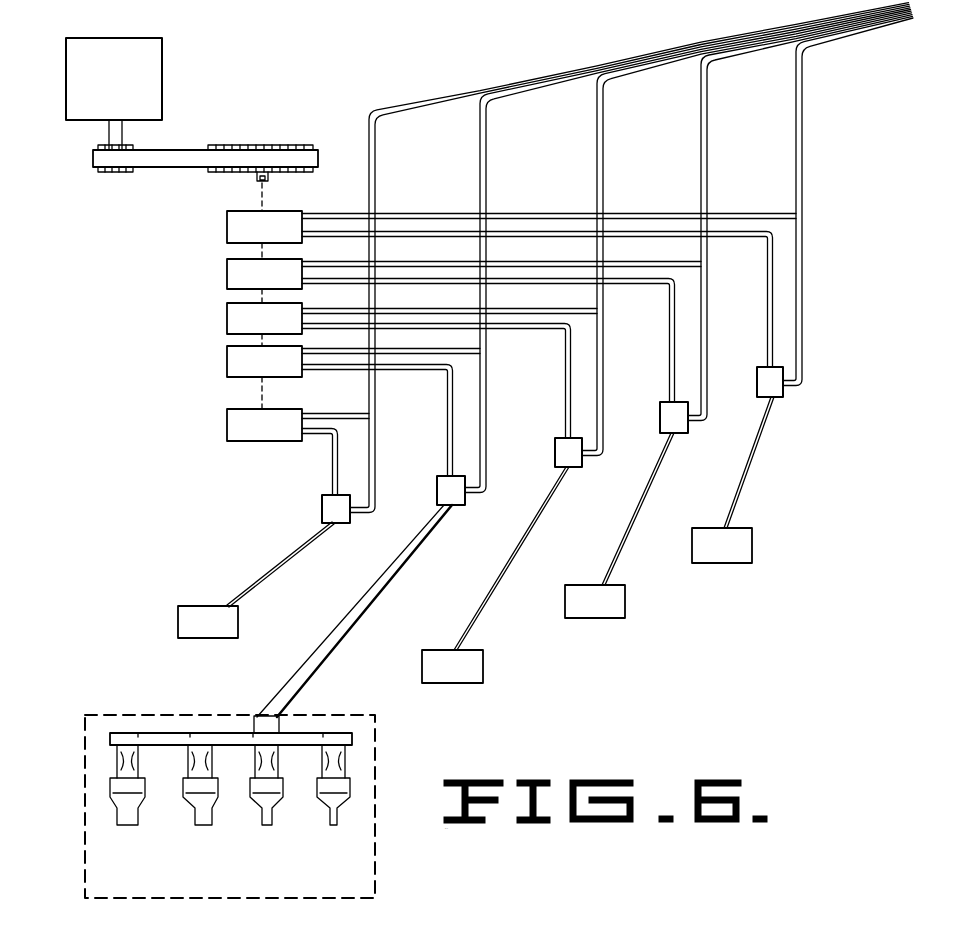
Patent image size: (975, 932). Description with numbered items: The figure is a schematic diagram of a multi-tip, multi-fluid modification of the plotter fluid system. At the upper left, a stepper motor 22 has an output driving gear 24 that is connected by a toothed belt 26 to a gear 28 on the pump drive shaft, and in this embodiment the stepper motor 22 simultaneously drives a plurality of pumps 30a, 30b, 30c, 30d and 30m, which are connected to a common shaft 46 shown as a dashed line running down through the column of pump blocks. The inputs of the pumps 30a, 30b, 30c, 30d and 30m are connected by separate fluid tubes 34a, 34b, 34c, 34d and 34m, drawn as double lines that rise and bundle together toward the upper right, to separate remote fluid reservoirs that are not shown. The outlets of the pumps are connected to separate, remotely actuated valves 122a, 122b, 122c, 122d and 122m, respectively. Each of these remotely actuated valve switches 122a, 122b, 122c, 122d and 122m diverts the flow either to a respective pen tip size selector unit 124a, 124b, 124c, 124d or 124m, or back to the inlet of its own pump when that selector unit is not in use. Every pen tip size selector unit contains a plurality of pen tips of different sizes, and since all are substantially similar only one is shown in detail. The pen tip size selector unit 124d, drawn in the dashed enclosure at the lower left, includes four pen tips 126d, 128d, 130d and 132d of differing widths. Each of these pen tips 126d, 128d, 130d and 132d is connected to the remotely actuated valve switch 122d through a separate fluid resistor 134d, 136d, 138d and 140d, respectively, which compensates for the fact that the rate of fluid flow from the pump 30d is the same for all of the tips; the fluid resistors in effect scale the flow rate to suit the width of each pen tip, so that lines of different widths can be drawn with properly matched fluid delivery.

The stepper motor 22 is at (165, 46).
The output driving gear 24 is at (110, 177).
The toothed belt 26 is at (185, 163).
The gear 28 is at (229, 146).
The common shaft 46 is at (269, 181).
The pump 30a is at (227, 231).
The pump 30b is at (227, 278).
The pump 30c is at (227, 321).
The pump 30d is at (227, 363).
The pump 30m is at (227, 424).
The fluid tube 34a is at (805, 120).
The fluid tube 34b is at (708, 137).
The fluid tube 34c is at (605, 157).
The fluid tube 34d is at (488, 168).
The fluid tube 34m is at (376, 182).
The remotely actuated valve 122a is at (758, 373).
The remotely actuated valve 122b is at (660, 418).
The remotely actuated valve 122c is at (555, 453).
The remotely actuated valve switch 122d is at (437, 488).
The remotely actuated valve 122m is at (322, 510).
The pen tip size selector unit 124a is at (705, 565).
The pen tip size selector unit 124b is at (564, 611).
The pen tip size selector unit 124c is at (422, 665).
The pen tip size selector unit 124d is at (148, 713).
The pen tip size selector unit 124m is at (178, 618).
The pen tip 126d is at (117, 815).
The pen tip 128d is at (195, 818).
The pen tip 130d is at (272, 818).
The pen tip 132d is at (338, 815).
The fluid resistor 134d is at (117, 768).
The fluid resistor 136d is at (192, 766).
The fluid resistor 138d is at (280, 766).
The fluid resistor 140d is at (347, 762).